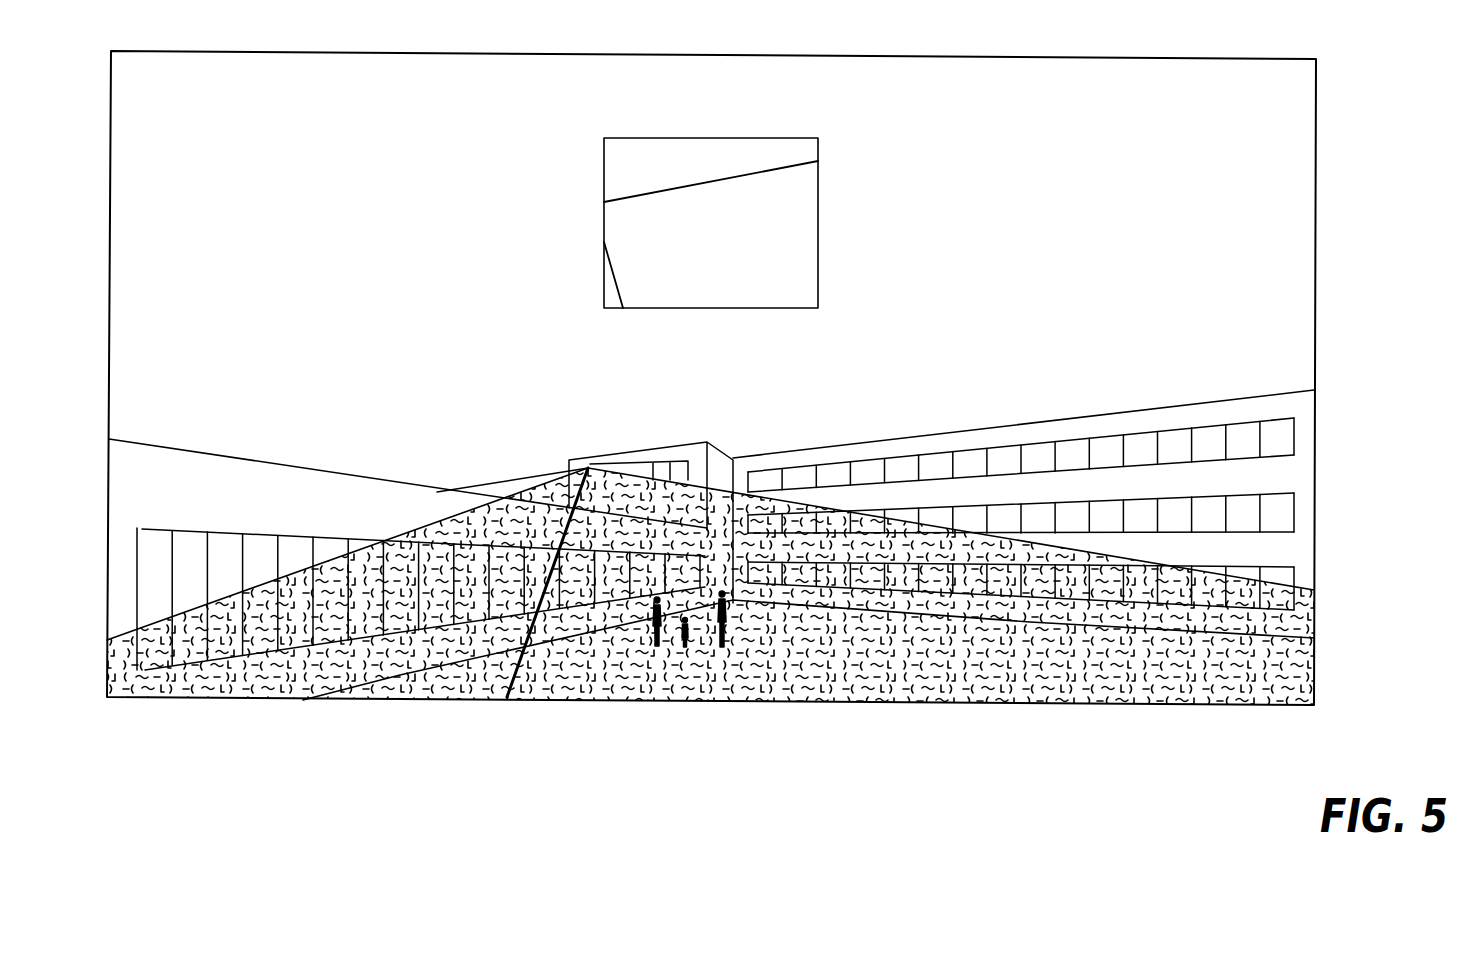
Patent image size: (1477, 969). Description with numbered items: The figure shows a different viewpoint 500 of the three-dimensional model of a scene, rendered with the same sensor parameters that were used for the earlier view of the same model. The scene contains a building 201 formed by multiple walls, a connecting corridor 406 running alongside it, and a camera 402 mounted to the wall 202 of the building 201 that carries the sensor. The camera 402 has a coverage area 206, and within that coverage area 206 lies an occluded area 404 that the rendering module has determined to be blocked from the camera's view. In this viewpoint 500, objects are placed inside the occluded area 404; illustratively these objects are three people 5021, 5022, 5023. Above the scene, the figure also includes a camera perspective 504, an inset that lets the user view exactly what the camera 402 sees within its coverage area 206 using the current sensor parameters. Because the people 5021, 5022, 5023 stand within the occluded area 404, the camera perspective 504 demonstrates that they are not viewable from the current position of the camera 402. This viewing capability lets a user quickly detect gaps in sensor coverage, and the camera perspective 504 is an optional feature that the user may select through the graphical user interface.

The viewpoint 500 is at (1055, 80).
The camera perspective 504 is at (805, 235).
The building 201 is at (1062, 306).
The wall 202 is at (1243, 422).
The coverage area 206 is at (1072, 567).
The camera 402 is at (587, 467).
The occluded area 404 is at (745, 612).
The connecting corridor 406 is at (515, 579).
The person 5021 is at (655, 648).
The person 5022 is at (684, 650).
The person 5023 is at (725, 650).